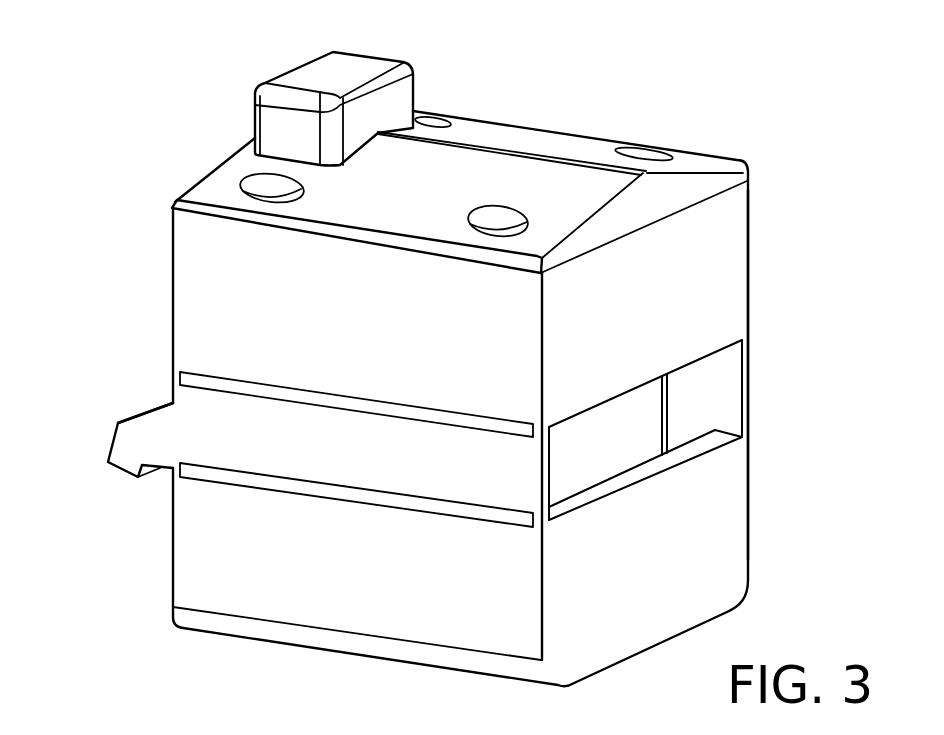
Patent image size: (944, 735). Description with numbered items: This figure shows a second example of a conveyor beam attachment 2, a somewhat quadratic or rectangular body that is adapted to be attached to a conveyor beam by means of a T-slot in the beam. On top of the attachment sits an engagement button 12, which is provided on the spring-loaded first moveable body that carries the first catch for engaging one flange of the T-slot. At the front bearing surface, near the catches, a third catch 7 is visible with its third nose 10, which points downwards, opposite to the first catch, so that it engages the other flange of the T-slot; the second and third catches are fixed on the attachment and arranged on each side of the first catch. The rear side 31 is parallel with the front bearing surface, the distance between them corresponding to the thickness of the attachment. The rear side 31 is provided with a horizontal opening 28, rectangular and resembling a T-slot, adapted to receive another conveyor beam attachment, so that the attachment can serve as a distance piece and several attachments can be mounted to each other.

The conveyor beam attachment 2 is at (300, 568).
The third catch 7 is at (153, 440).
The third nose 10 is at (107, 462).
The engagement button 12 is at (325, 75).
The horizontal opening 28 is at (778, 382).
The rear side 31 is at (703, 308).